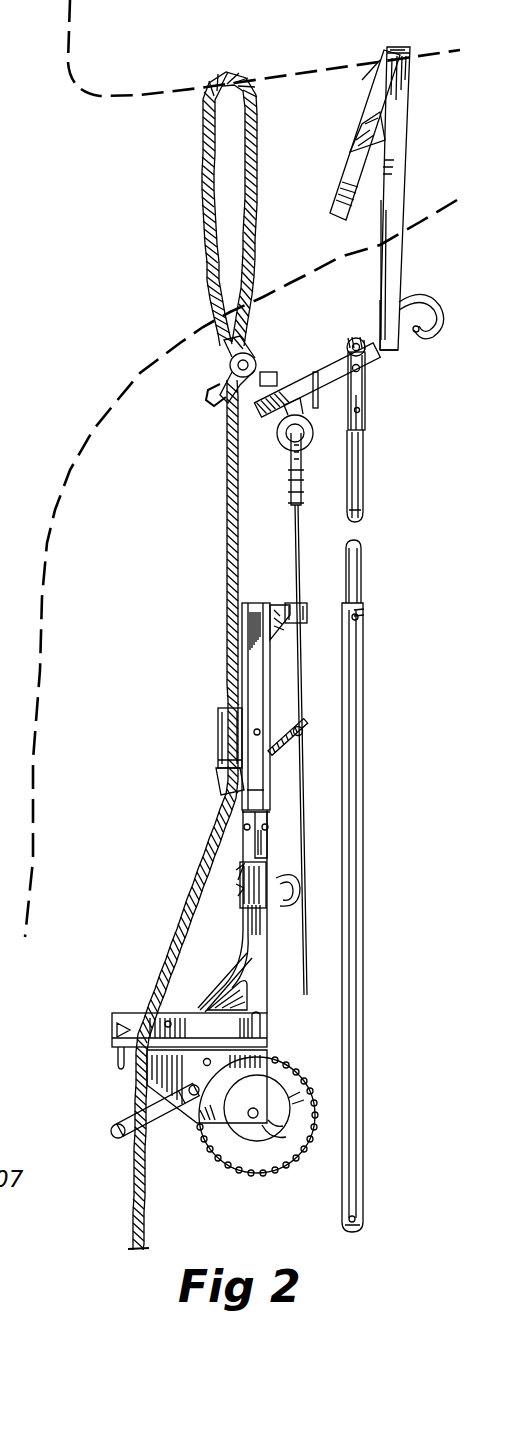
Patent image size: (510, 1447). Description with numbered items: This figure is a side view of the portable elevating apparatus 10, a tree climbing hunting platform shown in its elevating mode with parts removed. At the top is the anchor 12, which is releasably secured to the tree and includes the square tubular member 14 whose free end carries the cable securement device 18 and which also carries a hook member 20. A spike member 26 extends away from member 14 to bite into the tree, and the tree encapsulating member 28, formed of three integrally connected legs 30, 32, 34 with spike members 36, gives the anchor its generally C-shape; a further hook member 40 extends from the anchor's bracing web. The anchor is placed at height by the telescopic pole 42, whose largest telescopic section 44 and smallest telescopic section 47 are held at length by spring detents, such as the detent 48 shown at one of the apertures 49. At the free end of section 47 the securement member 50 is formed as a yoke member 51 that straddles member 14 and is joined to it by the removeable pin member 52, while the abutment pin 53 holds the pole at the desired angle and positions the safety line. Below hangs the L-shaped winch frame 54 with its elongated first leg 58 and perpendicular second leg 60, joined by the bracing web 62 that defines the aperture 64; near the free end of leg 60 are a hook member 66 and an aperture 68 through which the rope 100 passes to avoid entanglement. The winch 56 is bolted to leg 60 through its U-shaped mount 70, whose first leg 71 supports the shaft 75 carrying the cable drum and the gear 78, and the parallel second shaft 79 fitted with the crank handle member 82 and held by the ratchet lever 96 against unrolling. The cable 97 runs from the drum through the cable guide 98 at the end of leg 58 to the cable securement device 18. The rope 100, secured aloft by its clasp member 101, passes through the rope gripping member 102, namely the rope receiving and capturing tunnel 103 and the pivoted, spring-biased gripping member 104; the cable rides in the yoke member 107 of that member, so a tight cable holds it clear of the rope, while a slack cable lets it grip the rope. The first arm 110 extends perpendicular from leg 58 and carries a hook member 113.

The portable elevating apparatus 10 is at (133, 594).
The anchor 12 is at (387, 50).
The tubular member 14 is at (315, 372).
The cable securement device 18 is at (278, 438).
The hook member 20 is at (292, 374).
The spike member 26 is at (416, 298).
The tree encapsulating member 28 is at (398, 47).
The leg 30 is at (398, 222).
The leg 32 is at (405, 105).
The leg 34 is at (332, 206).
The spike members 36 is at (362, 120).
The hook member 40 is at (433, 338).
The telescopic pole 42 is at (364, 829).
The telescopic section 44 is at (366, 694).
The telescopic section 47 is at (365, 484).
The locking pin 48 is at (365, 611).
The apertures 49 is at (359, 619).
The securement member 50 is at (348, 340).
The yoke member 51 is at (366, 413).
The removeable pin member 52 is at (366, 322).
The abutment pin 53 is at (360, 369).
The winch frame 54 is at (258, 602).
The winch 56 is at (256, 1174).
The first leg 58 is at (242, 920).
The second leg 60 is at (112, 1014).
The bracing web 62 is at (238, 946).
The aperture 64 is at (218, 984).
The hook member 66 is at (116, 1057).
The aperture 68 is at (158, 1012).
The U-shaped mount 70 is at (190, 1117).
The first leg 71 is at (184, 1112).
The shaft 75 is at (247, 1112).
The gear 78 is at (225, 1167).
The second shaft 79 is at (200, 1089).
The crank handle member 82 is at (110, 1131).
The ratchet lever 96 is at (212, 1006).
The cable 97 is at (300, 542).
The cable guide 98 is at (300, 604).
The rope 100 is at (230, 72).
The clasp member 101 is at (214, 412).
The rope gripping member 102 is at (218, 722).
The rope receiving and capturing tunnel 103 is at (220, 759).
The gripping member 104 is at (312, 726).
The yoke member 107 is at (300, 726).
The first arm 110 is at (250, 845).
The hook member 113 is at (290, 874).